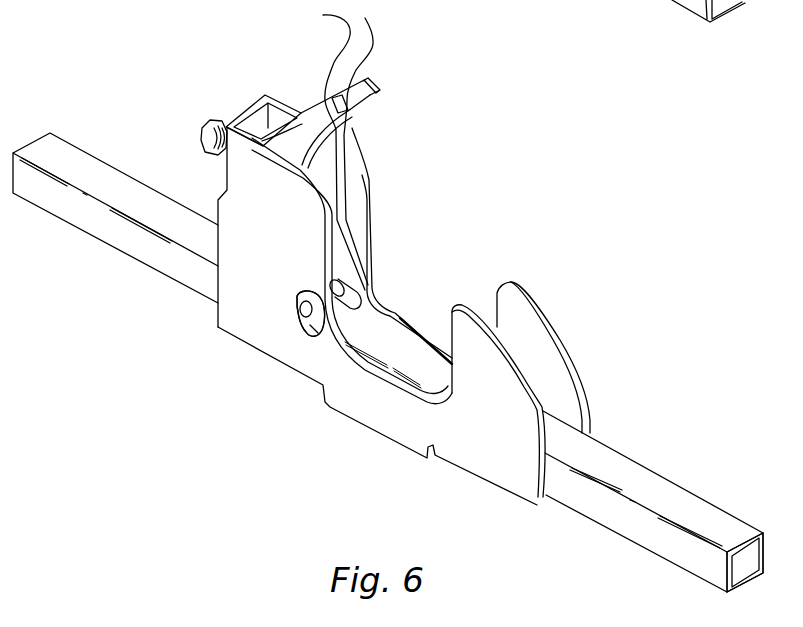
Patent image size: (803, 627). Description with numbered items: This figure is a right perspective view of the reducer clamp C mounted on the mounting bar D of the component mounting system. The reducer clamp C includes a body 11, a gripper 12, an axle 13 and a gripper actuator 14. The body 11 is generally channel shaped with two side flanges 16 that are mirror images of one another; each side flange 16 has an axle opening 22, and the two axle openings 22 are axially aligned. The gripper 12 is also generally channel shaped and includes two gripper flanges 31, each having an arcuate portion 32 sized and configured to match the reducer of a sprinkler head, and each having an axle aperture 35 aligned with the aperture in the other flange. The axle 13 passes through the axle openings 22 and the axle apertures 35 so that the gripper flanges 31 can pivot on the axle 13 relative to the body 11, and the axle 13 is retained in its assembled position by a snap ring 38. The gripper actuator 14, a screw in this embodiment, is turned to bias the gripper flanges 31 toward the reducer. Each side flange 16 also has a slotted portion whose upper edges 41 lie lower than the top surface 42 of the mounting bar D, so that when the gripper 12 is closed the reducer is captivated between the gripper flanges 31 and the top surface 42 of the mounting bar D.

The body 11 is at (553, 322).
The gripper 12 is at (380, 82).
The axle 13 is at (303, 322).
The gripper actuator 14 is at (207, 125).
The side flanges 16 is at (483, 413).
The axle opening 22 is at (205, 328).
The gripper flanges 31 is at (332, 147).
The arcuate portion 32 is at (350, 128).
The axle aperture 35 is at (338, 252).
The snap ring 38 is at (218, 248).
The upper edges 41 is at (388, 373).
The top surface 42 is at (608, 463).
The reducer clamp C is at (457, 122).
The mounting bar D is at (643, 465).